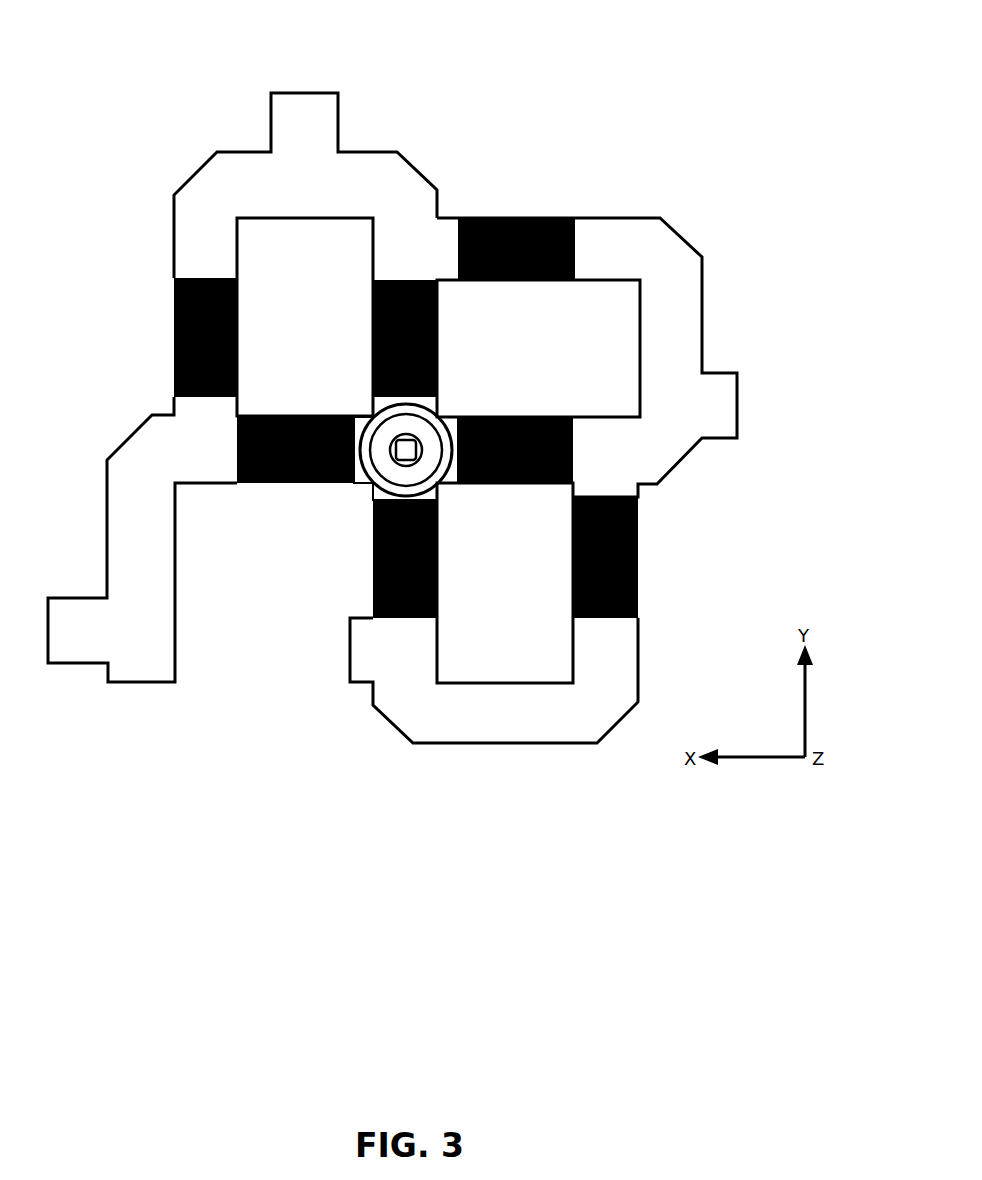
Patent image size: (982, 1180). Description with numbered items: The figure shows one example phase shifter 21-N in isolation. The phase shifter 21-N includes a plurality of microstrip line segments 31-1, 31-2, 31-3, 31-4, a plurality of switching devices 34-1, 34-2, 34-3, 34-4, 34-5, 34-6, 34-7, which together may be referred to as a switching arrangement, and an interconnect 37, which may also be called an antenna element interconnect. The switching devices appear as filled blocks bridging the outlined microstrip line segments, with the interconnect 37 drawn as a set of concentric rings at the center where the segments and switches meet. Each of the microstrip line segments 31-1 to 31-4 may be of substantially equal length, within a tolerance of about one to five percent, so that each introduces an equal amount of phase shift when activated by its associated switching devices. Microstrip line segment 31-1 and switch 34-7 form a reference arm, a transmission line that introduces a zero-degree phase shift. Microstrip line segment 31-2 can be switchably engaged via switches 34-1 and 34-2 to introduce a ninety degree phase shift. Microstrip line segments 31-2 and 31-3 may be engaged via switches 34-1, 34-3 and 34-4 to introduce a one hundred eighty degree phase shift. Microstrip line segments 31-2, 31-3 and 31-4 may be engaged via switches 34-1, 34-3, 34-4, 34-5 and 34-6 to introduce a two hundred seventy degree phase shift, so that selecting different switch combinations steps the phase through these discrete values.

The phase shifter 21-N is at (213, 62).
The microstrip line segment 31-1 is at (148, 415).
The microstrip line segment 31-2 is at (327, 93).
The microstrip line segment 31-3 is at (607, 216).
The microstrip line segment 31-4 is at (538, 681).
The switching device 34-1 is at (172, 297).
The switching device 34-2 is at (373, 295).
The switching device 34-3 is at (525, 216).
The switching device 34-4 is at (538, 414).
The switching device 34-5 is at (571, 558).
The switching device 34-6 is at (372, 556).
The switching device 34-7 is at (307, 414).
The interconnect 37 is at (368, 411).